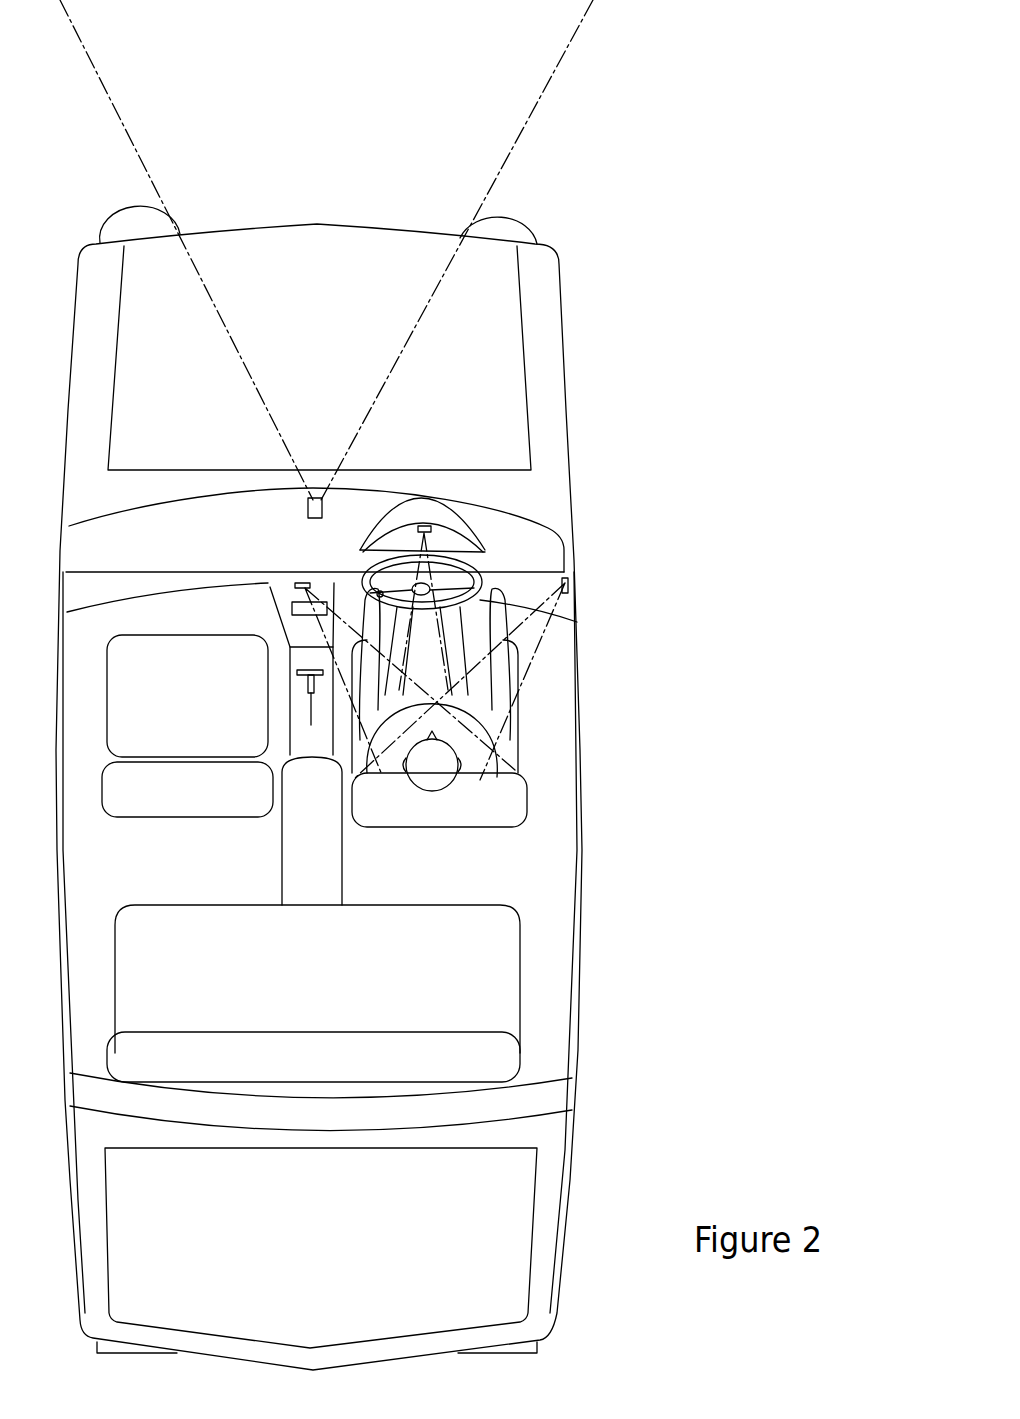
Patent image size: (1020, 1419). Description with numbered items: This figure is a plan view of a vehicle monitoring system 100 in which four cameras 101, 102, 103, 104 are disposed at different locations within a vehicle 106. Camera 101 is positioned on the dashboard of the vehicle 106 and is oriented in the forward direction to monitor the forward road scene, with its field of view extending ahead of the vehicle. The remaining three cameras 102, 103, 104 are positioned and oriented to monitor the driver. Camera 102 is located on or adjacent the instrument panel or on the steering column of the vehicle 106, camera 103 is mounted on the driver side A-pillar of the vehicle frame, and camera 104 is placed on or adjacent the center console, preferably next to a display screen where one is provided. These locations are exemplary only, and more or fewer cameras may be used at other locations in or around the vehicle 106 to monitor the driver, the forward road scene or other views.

The vehicle monitoring system 100 is at (545, 540).
The camera 101 is at (308, 512).
The camera 102 is at (425, 526).
The camera 103 is at (570, 582).
The camera 104 is at (302, 584).
The vehicle 106 is at (555, 402).